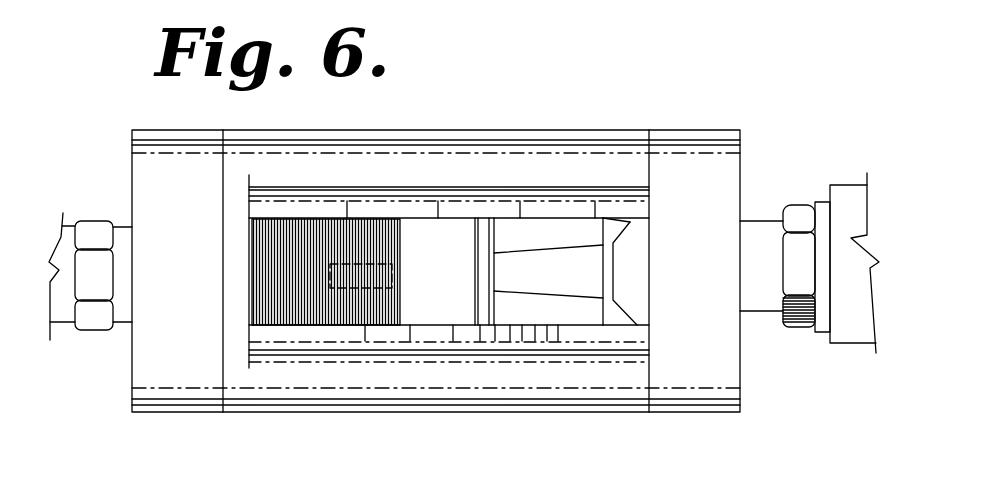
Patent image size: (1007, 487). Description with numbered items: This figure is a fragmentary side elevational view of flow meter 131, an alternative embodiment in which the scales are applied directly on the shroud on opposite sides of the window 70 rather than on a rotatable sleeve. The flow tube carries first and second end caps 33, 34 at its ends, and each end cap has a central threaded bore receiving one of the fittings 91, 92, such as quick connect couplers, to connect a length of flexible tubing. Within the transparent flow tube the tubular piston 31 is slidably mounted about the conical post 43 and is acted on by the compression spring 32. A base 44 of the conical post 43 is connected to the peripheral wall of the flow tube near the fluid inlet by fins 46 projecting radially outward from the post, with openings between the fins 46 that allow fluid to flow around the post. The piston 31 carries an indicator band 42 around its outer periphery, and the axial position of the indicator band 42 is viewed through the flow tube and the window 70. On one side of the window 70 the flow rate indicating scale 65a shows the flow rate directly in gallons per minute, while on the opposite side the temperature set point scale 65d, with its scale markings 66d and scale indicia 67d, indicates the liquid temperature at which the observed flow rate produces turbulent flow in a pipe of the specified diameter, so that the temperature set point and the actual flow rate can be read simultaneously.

The flow meter 131 is at (106, 395).
The first end cap 33 is at (692, 135).
The second end cap 34 is at (175, 408).
The fitting 92 is at (68, 216).
The fitting 91 is at (803, 204).
The flow rate indicating scale 65a is at (535, 173).
The scale 65d is at (384, 368).
The scale markings 66d is at (562, 336).
The scale indicia 67d is at (511, 378).
The piston 31 is at (424, 233).
The compression spring 32 is at (257, 247).
The conical post 43 is at (392, 280).
The indicator band 42 is at (472, 233).
The base of the conical post 44 is at (590, 270).
The fins 46 is at (620, 237).
The window 70 is at (623, 224).